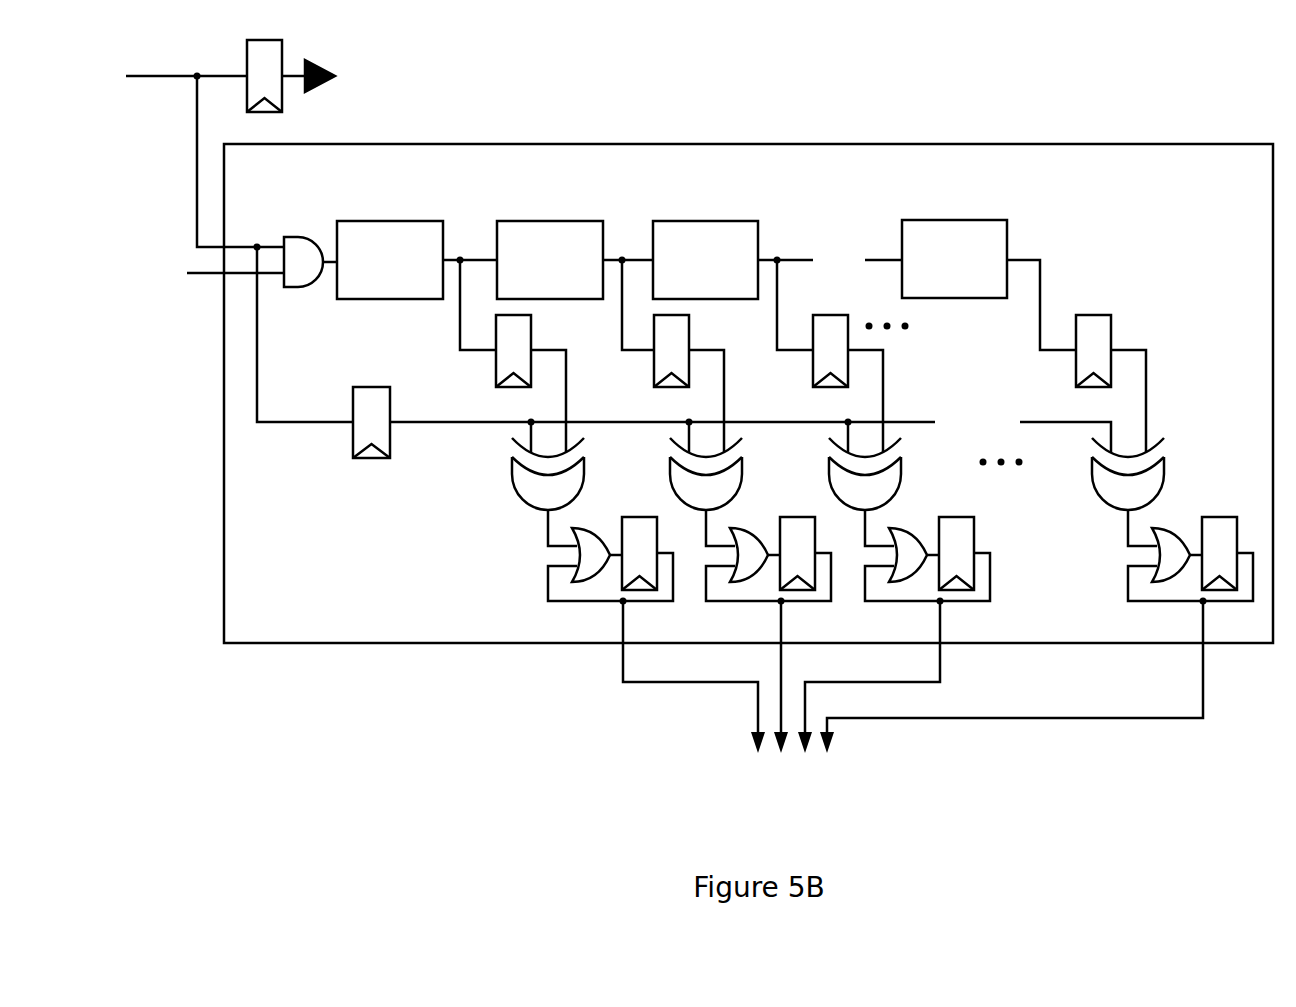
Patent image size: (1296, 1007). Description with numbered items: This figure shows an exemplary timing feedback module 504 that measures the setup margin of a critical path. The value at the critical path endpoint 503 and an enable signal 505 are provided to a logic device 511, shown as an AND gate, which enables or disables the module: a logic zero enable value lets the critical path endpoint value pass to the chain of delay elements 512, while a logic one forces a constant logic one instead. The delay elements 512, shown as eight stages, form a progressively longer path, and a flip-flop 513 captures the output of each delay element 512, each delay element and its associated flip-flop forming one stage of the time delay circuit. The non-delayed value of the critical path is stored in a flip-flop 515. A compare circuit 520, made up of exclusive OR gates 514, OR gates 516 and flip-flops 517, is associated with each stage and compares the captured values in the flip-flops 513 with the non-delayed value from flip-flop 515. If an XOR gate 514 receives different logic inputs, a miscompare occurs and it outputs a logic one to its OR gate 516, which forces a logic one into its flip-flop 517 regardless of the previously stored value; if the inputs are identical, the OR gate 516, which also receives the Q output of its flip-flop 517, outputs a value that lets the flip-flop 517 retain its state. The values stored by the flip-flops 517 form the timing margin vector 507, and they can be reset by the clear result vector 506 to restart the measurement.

The critical path endpoint 503 is at (230, 131).
The timing feedback module 504 is at (688, 137).
The enable signal 505 is at (189, 279).
The clear result vector 506 is at (1219, 517).
The timing margin vector 507 is at (913, 707).
The logic device 511 is at (307, 247).
The delay element 512 is at (706, 285).
The flip-flop 513 is at (798, 356).
The exclusive OR gate 514 is at (838, 483).
The flip-flop 515 is at (684, 352).
The OR gate 516 is at (887, 542).
The flip-flop 517 is at (900, 559).
The compare circuit 520 is at (462, 535).